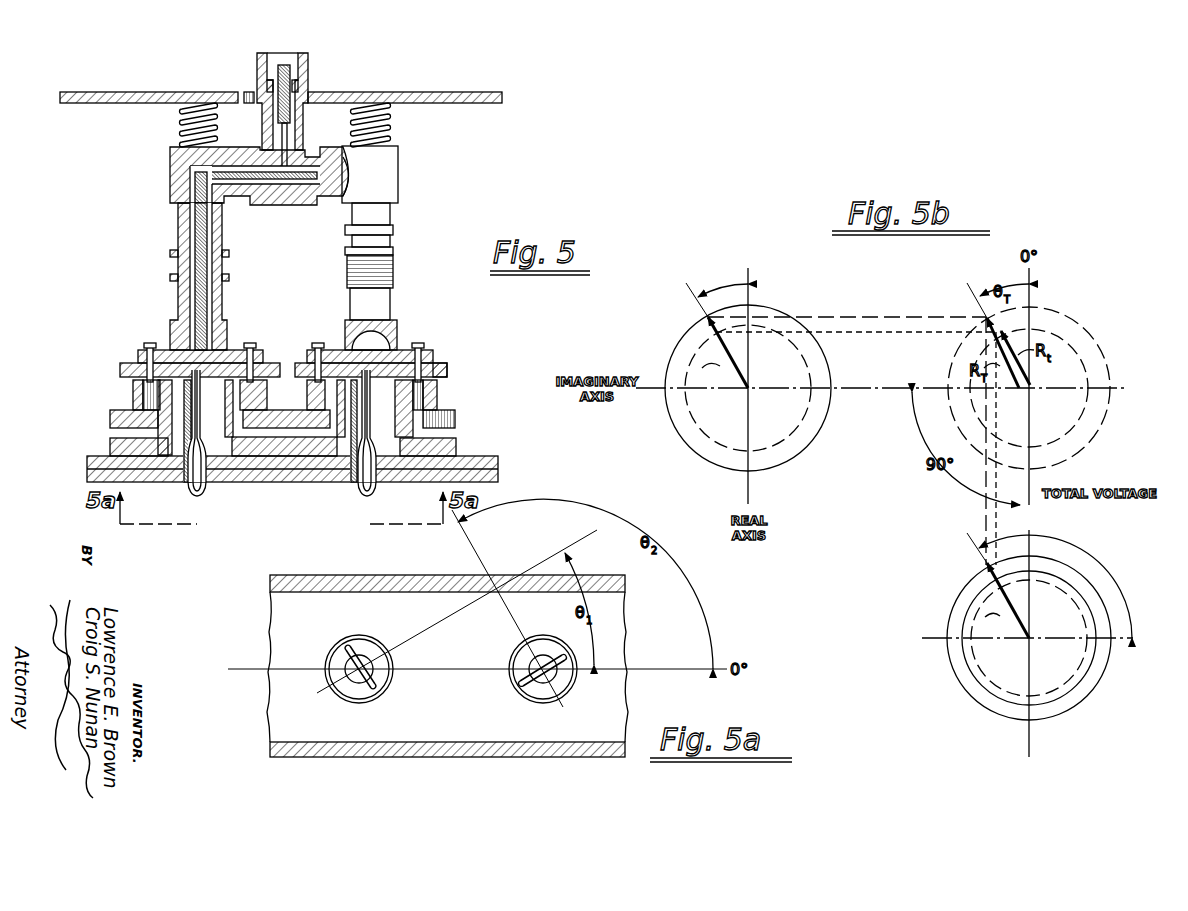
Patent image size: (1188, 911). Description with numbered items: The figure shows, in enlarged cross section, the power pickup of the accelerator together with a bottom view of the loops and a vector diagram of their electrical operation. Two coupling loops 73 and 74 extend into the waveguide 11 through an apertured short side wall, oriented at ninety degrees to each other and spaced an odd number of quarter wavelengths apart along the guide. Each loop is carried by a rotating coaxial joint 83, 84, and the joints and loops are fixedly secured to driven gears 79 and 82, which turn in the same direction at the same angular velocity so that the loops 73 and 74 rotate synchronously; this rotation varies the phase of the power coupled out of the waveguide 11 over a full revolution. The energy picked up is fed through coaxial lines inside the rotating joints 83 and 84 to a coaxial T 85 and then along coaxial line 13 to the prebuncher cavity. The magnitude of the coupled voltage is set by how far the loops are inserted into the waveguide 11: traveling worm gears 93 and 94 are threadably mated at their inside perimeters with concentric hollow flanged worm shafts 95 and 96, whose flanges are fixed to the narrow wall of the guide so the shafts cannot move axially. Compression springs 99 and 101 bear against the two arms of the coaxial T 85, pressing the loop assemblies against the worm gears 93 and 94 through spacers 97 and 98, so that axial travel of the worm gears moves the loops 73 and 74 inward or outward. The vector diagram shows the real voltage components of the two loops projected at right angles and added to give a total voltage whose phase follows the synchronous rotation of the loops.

In FIG. 5, the waveguide 11 is at (498, 472).
In FIG. 5A, the waveguide 11 is at (311, 637).
In FIG. 5, the coaxial line 13 is at (307, 77).
In FIG. 5, the coupling loop 73 is at (205, 500).
In FIG. 5A, the coupling loop 73 is at (360, 684).
In FIG. 5B, the coupling loop 73 is at (722, 375).
In FIG. 5, the coupling loop 74 is at (359, 500).
In FIG. 5A, the coupling loop 74 is at (543, 684).
In FIG. 5B, the coupling loop 74 is at (1007, 660).
In FIG. 5, the driven gear 79 is at (130, 362).
In FIG. 5, the driven gear 82 is at (445, 372).
In FIG. 5, the rotating coaxial joint 83 is at (176, 273).
In FIG. 5, the rotating coaxial joint 84 is at (397, 282).
In FIG. 5, the coaxial T 85 is at (283, 208).
In FIG. 5, the traveling worm gear 93 is at (456, 418).
In FIG. 5, the traveling worm gear 94 is at (109, 418).
In FIG. 5, the hollow flanged worm shaft 95 is at (457, 446).
In FIG. 5, the hollow flanged worm shaft 96 is at (109, 446).
In FIG. 5, the spacer 97 is at (438, 394).
In FIG. 5, the spacer 98 is at (132, 392).
In FIG. 5, the compression spring 99 is at (389, 124).
In FIG. 5, the compression spring 101 is at (181, 124).